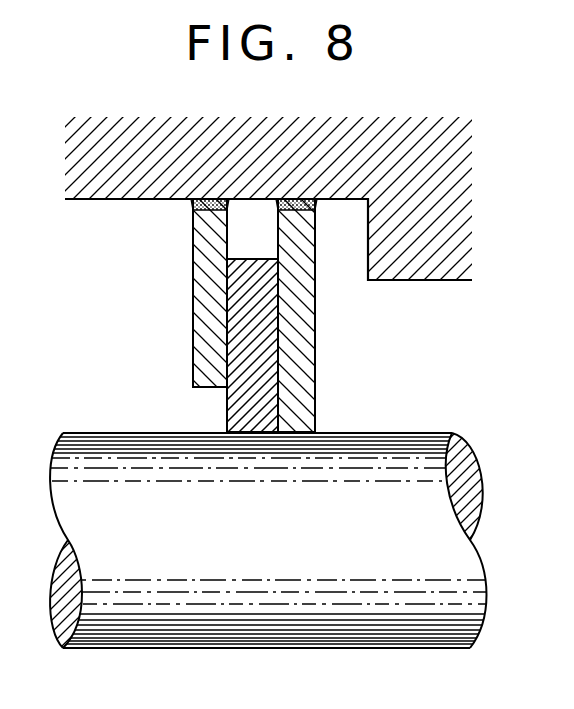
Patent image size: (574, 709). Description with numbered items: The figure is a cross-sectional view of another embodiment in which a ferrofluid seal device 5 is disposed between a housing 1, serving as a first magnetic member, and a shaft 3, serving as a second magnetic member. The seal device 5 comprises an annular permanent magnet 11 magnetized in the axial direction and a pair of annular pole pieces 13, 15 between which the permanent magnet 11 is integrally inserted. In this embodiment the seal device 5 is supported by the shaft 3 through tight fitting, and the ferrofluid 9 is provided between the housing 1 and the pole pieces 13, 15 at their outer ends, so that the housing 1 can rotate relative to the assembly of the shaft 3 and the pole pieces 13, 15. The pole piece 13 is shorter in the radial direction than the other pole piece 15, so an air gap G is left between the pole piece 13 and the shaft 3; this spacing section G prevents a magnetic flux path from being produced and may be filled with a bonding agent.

The housing 1 is at (467, 198).
The shaft 3 is at (442, 443).
The ferrofluid seal device 5 is at (330, 393).
The ferrofluid 9 is at (188, 207).
The permanent magnet 11 is at (278, 372).
The pole piece 13 is at (200, 290).
The pole piece 15 is at (313, 308).
The air gap G is at (205, 406).